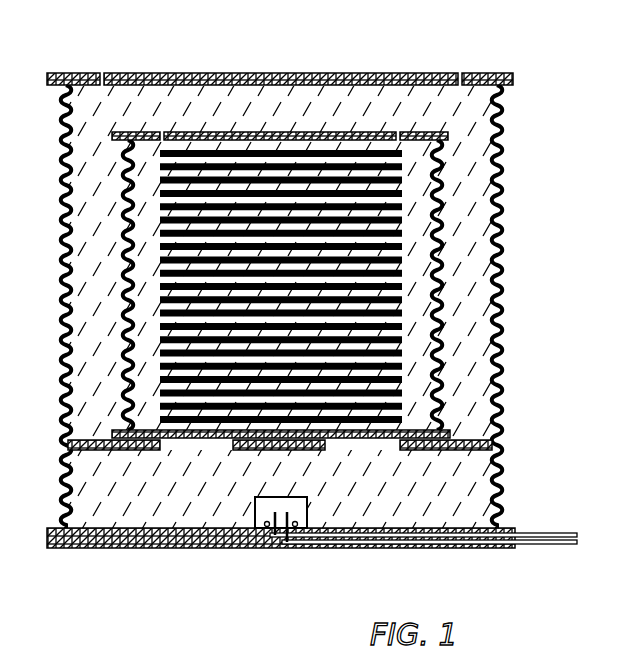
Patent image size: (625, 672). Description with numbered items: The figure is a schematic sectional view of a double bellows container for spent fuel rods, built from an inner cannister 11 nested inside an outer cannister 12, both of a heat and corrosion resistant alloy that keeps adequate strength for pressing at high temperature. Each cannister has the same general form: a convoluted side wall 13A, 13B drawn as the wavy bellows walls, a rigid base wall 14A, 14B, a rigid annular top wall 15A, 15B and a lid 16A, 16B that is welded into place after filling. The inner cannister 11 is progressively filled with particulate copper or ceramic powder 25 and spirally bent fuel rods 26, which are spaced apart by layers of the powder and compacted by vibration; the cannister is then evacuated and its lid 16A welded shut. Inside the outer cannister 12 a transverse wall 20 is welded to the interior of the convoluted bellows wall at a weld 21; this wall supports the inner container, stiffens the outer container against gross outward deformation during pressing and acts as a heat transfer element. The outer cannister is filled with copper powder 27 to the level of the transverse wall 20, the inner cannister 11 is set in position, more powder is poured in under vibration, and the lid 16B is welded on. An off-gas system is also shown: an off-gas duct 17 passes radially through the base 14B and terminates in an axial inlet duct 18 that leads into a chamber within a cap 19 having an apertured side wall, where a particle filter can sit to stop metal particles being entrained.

The inner cannister 11 is at (449, 208).
The outer cannister 12 is at (514, 250).
The convoluted side wall 13A is at (440, 312).
The convoluted side wall 13B is at (500, 300).
The rigid base wall 14A is at (352, 440).
The rigid base wall 14B is at (240, 545).
The rigid annular top wall 15A is at (420, 132).
The rigid annular top wall 15B is at (485, 75).
The lid 16A is at (205, 131).
The lid 16B is at (123, 88).
The off-gas duct 17 is at (493, 540).
The axial inlet duct 18 is at (267, 533).
The cap 19 is at (257, 496).
The transverse wall 20 is at (77, 442).
The weld 21 is at (78, 430).
The copper powder or ceramic powder 25 is at (133, 305).
The spirally bent fuel rods 26 is at (168, 424).
The copper powder 27 is at (104, 502).